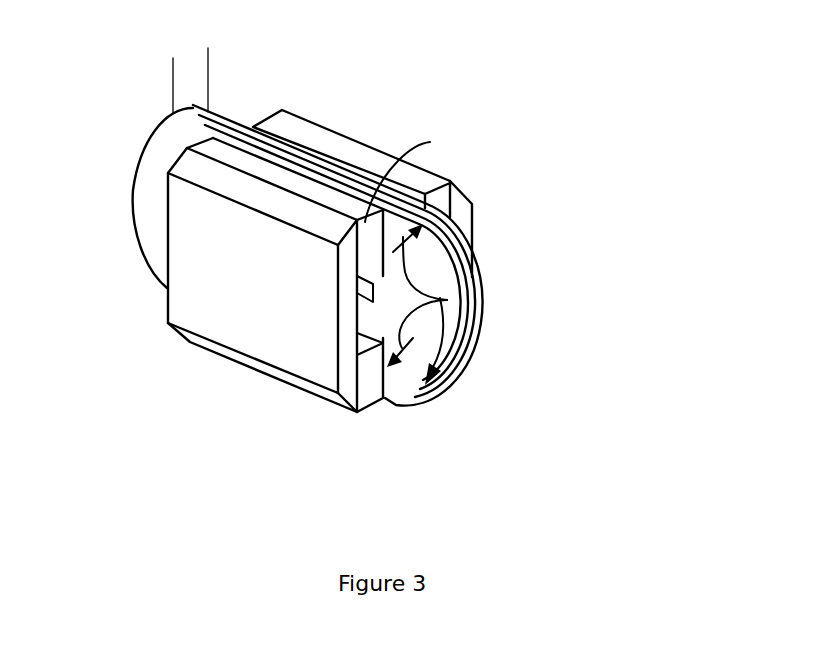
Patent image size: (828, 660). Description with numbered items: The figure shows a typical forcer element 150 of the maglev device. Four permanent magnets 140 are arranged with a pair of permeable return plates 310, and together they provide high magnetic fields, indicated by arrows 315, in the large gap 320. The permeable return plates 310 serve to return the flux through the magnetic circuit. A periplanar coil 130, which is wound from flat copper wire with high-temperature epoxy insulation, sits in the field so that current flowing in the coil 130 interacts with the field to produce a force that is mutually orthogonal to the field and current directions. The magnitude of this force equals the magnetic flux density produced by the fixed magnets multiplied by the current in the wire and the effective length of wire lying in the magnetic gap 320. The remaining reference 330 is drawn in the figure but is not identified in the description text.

The flexible band / sleeve 130 is at (476, 340).
The clamp ends of band 140 is at (450, 178).
The sensor assembly 150 is at (112, 100).
The sensor block / housing 310 is at (306, 352).
The tensioning direction of band 315 is at (447, 300).
The band width 320 is at (208, 50).
The inner surface of band 330 is at (437, 257).